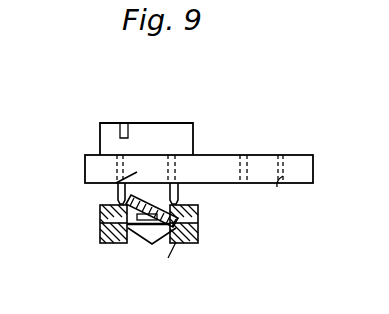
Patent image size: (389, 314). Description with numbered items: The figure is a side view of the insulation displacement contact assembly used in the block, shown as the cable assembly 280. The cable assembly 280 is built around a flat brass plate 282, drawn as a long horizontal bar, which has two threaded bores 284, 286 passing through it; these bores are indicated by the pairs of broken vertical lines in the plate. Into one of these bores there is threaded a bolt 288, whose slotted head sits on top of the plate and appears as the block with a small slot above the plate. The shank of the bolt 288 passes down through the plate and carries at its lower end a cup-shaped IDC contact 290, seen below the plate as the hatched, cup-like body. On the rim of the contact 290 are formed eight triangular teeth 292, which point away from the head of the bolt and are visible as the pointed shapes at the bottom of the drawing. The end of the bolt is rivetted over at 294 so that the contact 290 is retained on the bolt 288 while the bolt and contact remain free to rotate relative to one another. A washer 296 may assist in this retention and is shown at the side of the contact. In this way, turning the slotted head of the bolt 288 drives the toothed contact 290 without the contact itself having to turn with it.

The cable assembly 280 is at (98, 145).
The flat brass plate 282 is at (210, 170).
The threaded bore 284 is at (113, 187).
The threaded bore 286 is at (277, 189).
The bolt 288 is at (157, 140).
The cup-shaped IDC contact 290 is at (197, 213).
The triangular teeth 292 is at (153, 244).
The rivetted end of bolt 294 is at (133, 233).
The washer 296 is at (99, 223).